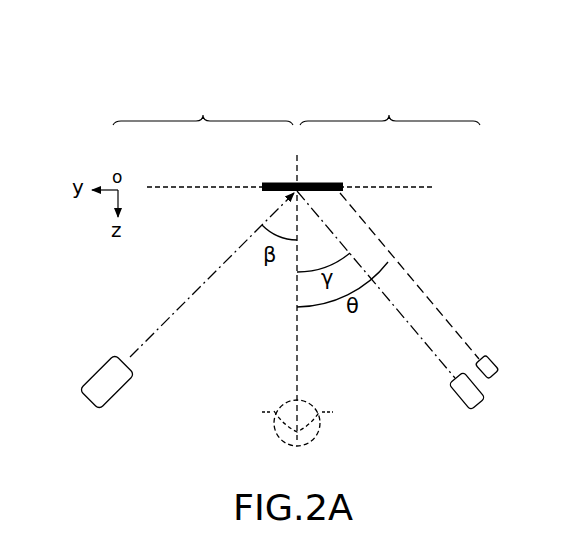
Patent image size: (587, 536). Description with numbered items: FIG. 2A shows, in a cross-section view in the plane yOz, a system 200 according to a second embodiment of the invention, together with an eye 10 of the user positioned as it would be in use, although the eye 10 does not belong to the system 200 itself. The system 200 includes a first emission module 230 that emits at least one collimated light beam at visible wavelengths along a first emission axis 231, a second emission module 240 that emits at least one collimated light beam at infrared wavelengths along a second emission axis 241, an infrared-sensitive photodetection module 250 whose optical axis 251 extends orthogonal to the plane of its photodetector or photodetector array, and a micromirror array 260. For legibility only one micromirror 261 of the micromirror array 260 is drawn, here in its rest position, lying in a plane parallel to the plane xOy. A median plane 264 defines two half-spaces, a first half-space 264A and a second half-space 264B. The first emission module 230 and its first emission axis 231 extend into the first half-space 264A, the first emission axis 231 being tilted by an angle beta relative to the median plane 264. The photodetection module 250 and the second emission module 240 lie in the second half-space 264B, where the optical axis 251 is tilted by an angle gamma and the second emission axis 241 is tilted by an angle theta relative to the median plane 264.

The system 200 is at (275, 90).
The first half-space 264A is at (203, 116).
The second half-space 264B is at (389, 116).
The median plane 264 is at (291, 178).
The micromirror array 260 is at (354, 167).
The micromirror 261 is at (330, 182).
The first emission axis 231 is at (220, 268).
The second emission axis 241 is at (415, 280).
The optical axis 251 is at (412, 331).
The first emission module 230 is at (84, 400).
The second emission module 240 is at (494, 360).
The photodetection module 250 is at (450, 403).
The eye 10 is at (273, 438).